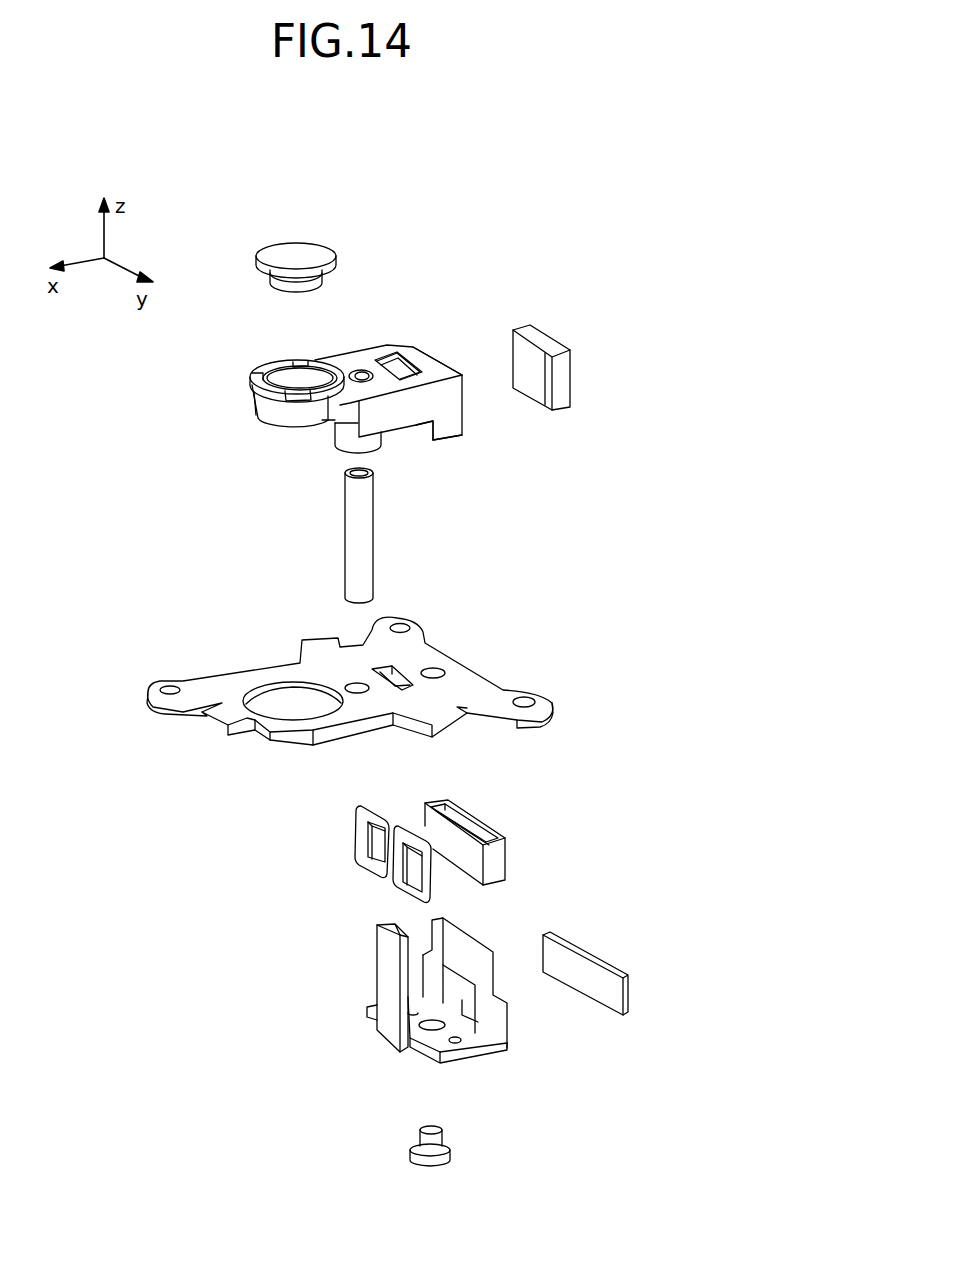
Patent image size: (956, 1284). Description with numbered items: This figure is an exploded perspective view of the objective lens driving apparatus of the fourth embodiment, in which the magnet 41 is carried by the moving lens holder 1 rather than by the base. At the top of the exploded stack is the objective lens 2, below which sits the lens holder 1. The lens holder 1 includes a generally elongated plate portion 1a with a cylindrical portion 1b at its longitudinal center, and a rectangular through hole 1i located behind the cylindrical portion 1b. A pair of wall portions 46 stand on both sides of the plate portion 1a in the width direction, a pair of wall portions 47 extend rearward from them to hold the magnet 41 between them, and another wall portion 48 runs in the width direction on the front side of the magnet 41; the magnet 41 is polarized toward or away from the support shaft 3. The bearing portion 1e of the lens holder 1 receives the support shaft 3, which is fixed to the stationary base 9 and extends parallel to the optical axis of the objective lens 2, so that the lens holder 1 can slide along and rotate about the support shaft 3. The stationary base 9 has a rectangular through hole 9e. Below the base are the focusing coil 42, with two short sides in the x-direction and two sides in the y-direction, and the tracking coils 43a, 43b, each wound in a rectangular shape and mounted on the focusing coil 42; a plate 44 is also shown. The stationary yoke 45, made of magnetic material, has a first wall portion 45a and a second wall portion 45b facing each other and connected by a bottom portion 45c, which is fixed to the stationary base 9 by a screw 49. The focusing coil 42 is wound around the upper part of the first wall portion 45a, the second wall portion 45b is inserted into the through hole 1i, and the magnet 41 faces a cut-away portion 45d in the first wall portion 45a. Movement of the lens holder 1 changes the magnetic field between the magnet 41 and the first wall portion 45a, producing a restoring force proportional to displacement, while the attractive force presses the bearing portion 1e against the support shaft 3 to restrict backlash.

The objective lens 2 is at (294, 256).
The lens holder 1 is at (345, 360).
The rectangular through hole 1i is at (388, 356).
The wall portions 47 is at (410, 345).
The magnet 41 is at (566, 368).
The wall portions 46 is at (418, 407).
The plate portion 1a is at (338, 428).
The bearing portion 1e is at (363, 380).
The wall portion 48 is at (418, 441).
The cylindrical portion 1b is at (390, 449).
The support shaft 3 is at (352, 537).
The stationary base 9 is at (286, 745).
The rectangular through hole 9e is at (392, 663).
The tracking coil 43a is at (359, 844).
The tracking coil 43b is at (396, 886).
The focusing coil 42 is at (505, 848).
The cover plate 44 is at (592, 958).
The stationary yoke 45 is at (439, 1015).
The first wall portion 45a is at (443, 941).
The second wall portion 45b is at (385, 989).
The bottom portion 45c is at (470, 1053).
The cut-away portion 45d is at (463, 1013).
The screw 49 is at (446, 1148).